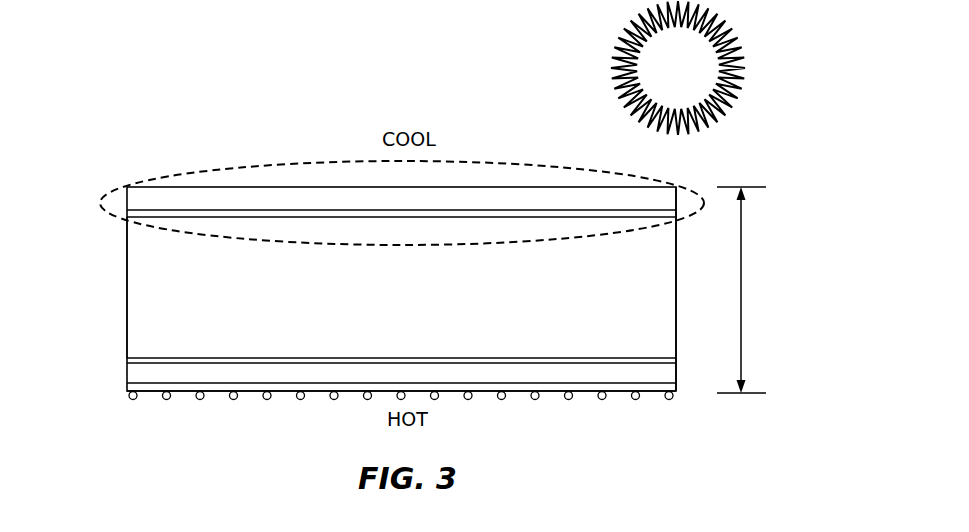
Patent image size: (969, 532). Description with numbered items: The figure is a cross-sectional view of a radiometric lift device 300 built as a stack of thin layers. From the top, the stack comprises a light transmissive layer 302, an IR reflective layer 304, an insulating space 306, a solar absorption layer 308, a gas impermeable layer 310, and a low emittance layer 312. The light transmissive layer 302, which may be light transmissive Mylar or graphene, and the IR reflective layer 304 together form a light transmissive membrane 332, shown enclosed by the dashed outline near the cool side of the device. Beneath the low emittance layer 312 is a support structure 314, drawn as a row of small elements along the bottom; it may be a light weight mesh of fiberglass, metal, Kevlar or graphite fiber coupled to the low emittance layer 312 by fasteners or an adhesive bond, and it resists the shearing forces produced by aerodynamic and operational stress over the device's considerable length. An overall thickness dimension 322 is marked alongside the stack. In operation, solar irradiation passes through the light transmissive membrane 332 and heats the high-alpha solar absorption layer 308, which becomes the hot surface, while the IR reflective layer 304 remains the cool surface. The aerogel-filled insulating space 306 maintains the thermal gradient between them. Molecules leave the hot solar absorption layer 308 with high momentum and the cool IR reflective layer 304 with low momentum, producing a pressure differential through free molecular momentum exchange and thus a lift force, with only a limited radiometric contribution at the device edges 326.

The radiometric lift device 300 is at (151, 48).
The light transmissive layer 302 is at (127, 188).
The IR reflective layer 304 is at (127, 213).
The insulating space 306 is at (127, 294).
The solar absorption layer 308 is at (127, 358).
The gas impermeable layer 310 is at (127, 372).
The low emittance layer 312 is at (127, 390).
The support structure 314 is at (201, 400).
The thickness dimension 322 is at (741, 290).
The device edges 326 is at (676, 290).
The light transmissive membrane 332 is at (193, 167).